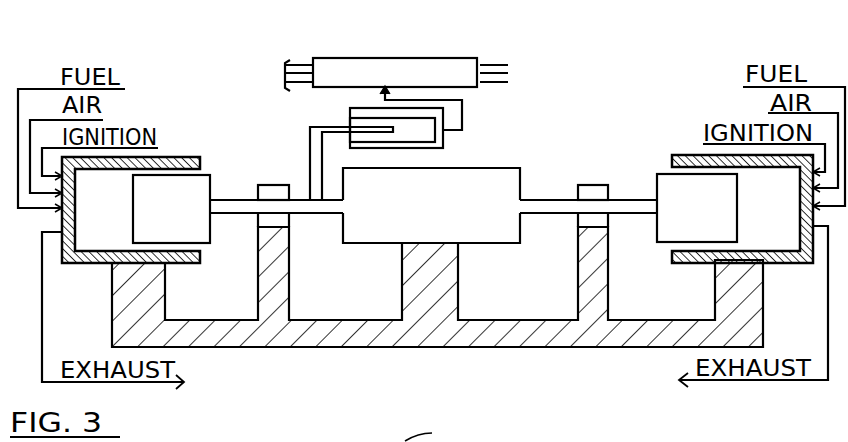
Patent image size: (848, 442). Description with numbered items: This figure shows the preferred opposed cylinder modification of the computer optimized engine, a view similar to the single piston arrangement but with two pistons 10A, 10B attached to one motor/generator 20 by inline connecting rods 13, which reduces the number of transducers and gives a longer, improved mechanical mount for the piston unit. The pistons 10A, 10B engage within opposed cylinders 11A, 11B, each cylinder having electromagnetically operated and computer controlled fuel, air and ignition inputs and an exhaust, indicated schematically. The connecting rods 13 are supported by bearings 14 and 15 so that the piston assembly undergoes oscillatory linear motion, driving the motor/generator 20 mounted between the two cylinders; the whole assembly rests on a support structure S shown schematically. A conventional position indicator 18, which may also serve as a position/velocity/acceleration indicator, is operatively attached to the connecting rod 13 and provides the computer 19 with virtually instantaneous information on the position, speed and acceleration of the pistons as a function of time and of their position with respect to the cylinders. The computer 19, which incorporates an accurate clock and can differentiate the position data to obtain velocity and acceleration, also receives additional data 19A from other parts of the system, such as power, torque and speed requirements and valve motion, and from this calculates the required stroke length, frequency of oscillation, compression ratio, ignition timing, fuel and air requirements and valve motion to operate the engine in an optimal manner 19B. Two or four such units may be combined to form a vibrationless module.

The piston 10A is at (192, 220).
The piston 10B is at (717, 218).
The cylinder 11A is at (100, 264).
The cylinder 11B is at (770, 262).
The connecting rod 13 is at (241, 207).
The bearing 14 is at (280, 218).
The bearing 15 is at (582, 217).
The position indicator 18 is at (402, 150).
The computer 19 is at (401, 58).
The additional data input 19A is at (512, 68).
The optimal operating output 19B is at (281, 65).
The motor/generator 20 is at (440, 219).
The support structure S is at (333, 347).